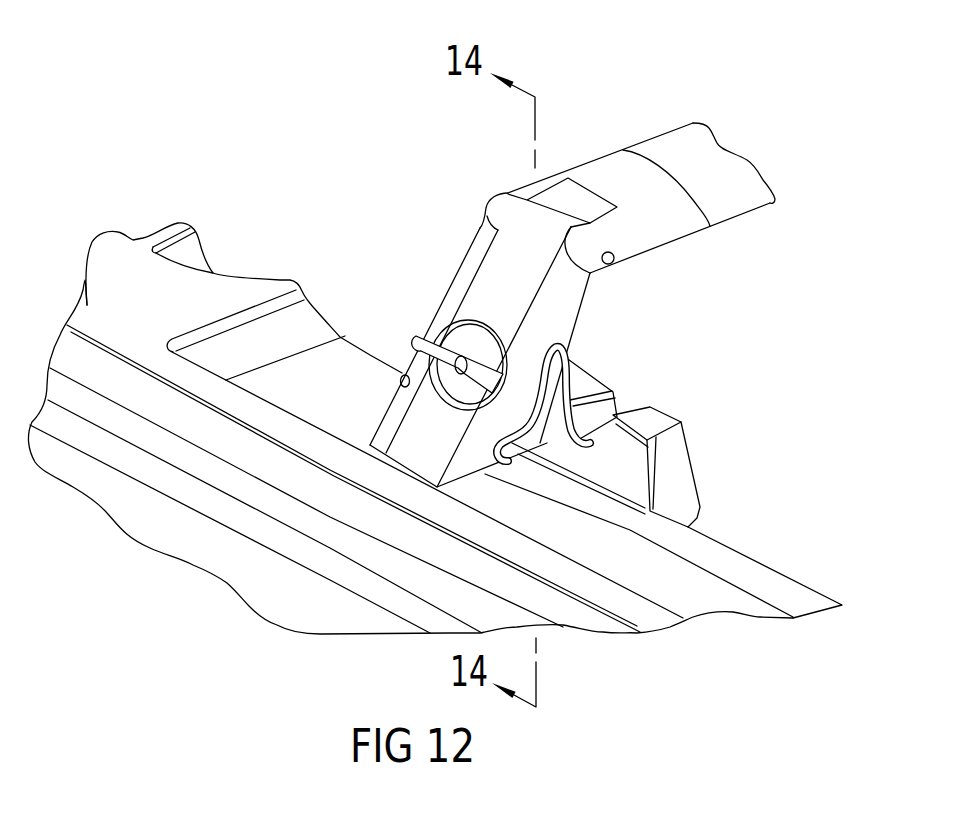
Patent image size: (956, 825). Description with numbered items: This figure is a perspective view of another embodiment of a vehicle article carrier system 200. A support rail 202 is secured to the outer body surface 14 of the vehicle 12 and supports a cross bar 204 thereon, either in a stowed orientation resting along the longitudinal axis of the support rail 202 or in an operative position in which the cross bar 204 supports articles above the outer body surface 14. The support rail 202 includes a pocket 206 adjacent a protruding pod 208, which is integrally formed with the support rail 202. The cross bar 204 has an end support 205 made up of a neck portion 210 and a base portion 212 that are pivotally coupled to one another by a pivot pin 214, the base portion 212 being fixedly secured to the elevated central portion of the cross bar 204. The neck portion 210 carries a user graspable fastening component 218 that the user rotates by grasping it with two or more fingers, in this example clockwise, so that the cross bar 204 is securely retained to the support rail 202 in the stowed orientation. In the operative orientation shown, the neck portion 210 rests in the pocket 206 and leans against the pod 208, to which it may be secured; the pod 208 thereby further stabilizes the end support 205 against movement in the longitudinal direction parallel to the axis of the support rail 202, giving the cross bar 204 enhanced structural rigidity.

The vehicle 12 is at (435, 376).
The outer body surface 14 is at (270, 585).
The vehicle article carrier system 200 is at (592, 324).
The support rail 202 is at (223, 268).
The cross bar 204 is at (656, 220).
The end support 205 is at (468, 187).
The pocket 206 is at (403, 373).
The pod 208 is at (578, 380).
The neck portion 210 is at (497, 265).
The base portion 212 is at (655, 243).
The pivot pin 214 is at (613, 263).
The user graspable fastening component 218 is at (413, 333).